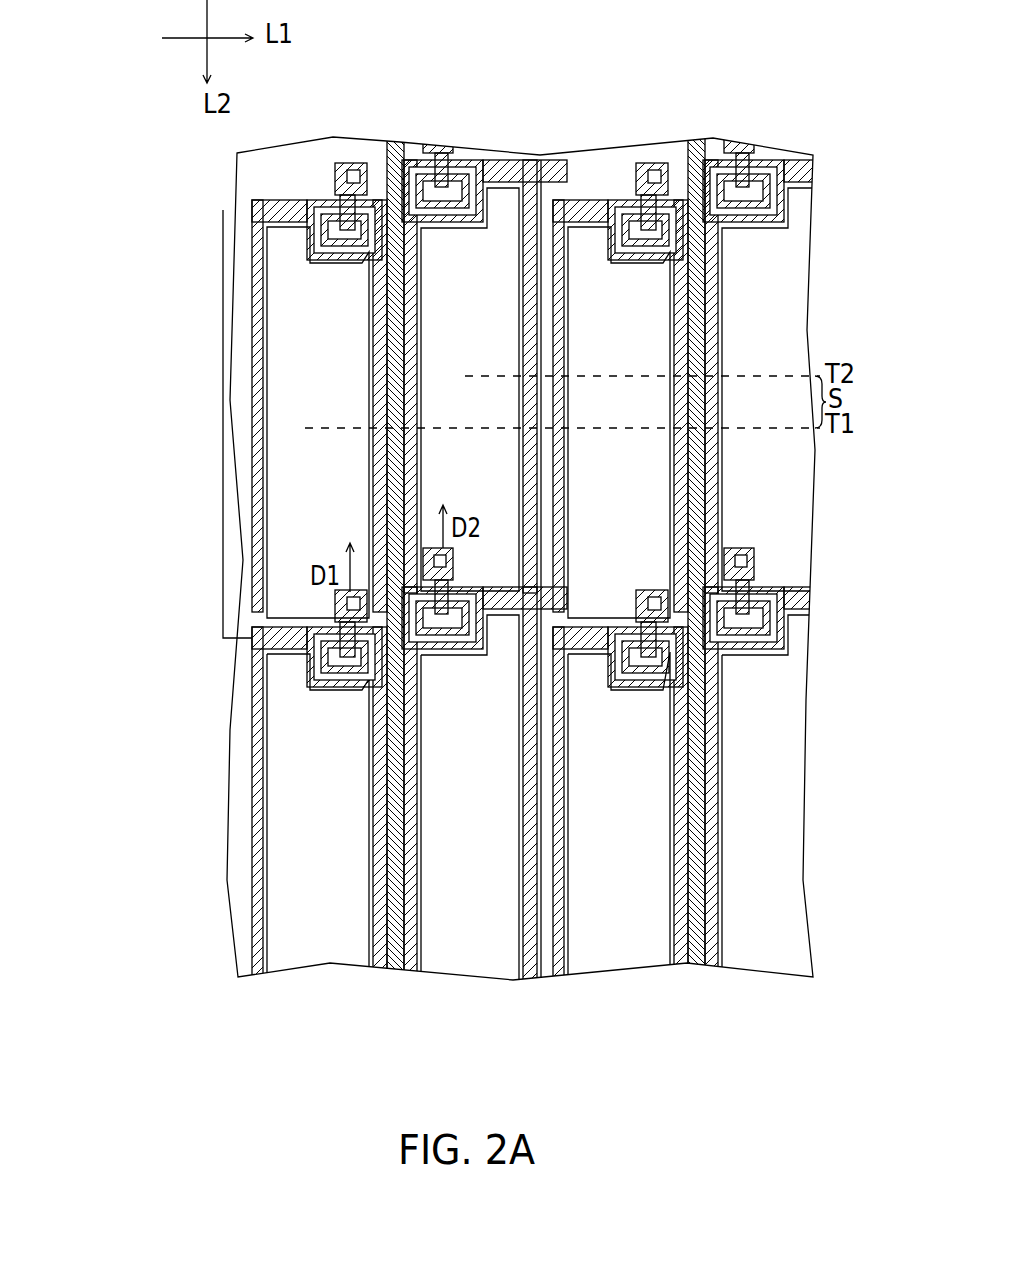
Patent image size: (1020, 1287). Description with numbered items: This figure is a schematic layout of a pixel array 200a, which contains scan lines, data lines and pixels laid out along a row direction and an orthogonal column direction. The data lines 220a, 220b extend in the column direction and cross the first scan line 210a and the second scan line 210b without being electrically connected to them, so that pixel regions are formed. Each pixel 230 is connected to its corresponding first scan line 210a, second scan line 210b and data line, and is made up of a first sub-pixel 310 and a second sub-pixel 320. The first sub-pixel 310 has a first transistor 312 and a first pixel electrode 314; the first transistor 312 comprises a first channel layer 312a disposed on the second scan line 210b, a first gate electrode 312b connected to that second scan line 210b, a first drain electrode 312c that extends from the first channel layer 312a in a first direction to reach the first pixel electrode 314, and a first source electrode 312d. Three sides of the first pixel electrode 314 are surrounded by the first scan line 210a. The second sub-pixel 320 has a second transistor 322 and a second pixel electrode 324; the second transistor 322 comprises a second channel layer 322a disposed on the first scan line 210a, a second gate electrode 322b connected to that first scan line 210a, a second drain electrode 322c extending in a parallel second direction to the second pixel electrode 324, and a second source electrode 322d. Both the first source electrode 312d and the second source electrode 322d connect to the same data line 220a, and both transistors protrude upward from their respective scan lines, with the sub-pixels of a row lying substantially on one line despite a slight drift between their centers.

The pixel array 200a is at (724, 990).
The first scan line 210a is at (250, 292).
The second scan line 210b is at (246, 834).
The data line 220a is at (395, 143).
The data line 220b is at (697, 150).
The pixel 230 is at (223, 210).
The first sub-pixel 310 is at (210, 631).
The first transistor 312 is at (239, 648).
The first channel layer 312a is at (330, 648).
The first gate electrode 312b is at (375, 688).
The first drain electrode 312c is at (345, 603).
The first source electrode 312d is at (360, 675).
The first pixel electrode 314 is at (293, 568).
The second sub-pixel 320 is at (260, 506).
The second transistor 322 is at (289, 528).
The second channel layer 322a is at (390, 608).
The second gate electrode 322b is at (385, 616).
The second drain electrode 322c is at (395, 600).
The second source electrode 322d is at (378, 626).
The second pixel electrode 324 is at (468, 336).